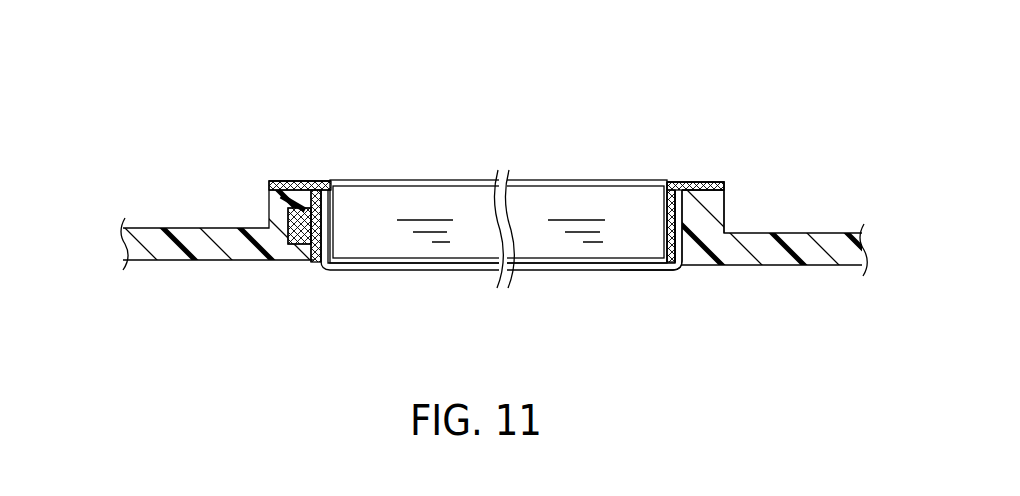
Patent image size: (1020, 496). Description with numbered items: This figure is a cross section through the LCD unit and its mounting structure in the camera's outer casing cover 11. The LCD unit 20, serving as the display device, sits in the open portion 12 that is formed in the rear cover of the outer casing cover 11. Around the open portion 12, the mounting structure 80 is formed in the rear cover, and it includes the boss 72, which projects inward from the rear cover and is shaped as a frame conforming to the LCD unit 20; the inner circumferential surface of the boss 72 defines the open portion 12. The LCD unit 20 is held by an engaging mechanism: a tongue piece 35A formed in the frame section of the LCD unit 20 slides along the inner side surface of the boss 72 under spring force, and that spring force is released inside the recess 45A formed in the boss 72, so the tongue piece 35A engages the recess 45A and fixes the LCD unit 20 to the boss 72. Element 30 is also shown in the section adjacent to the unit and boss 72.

The outer casing cover 11 is at (800, 233).
The open portion 12 is at (687, 247).
The LCD unit 20 is at (412, 191).
The sealing / packing member 30 is at (667, 220).
The tongue piece 35A is at (305, 186).
The recess 45A is at (297, 244).
The boss 72 is at (718, 208).
The mounting structure 80 is at (558, 277).